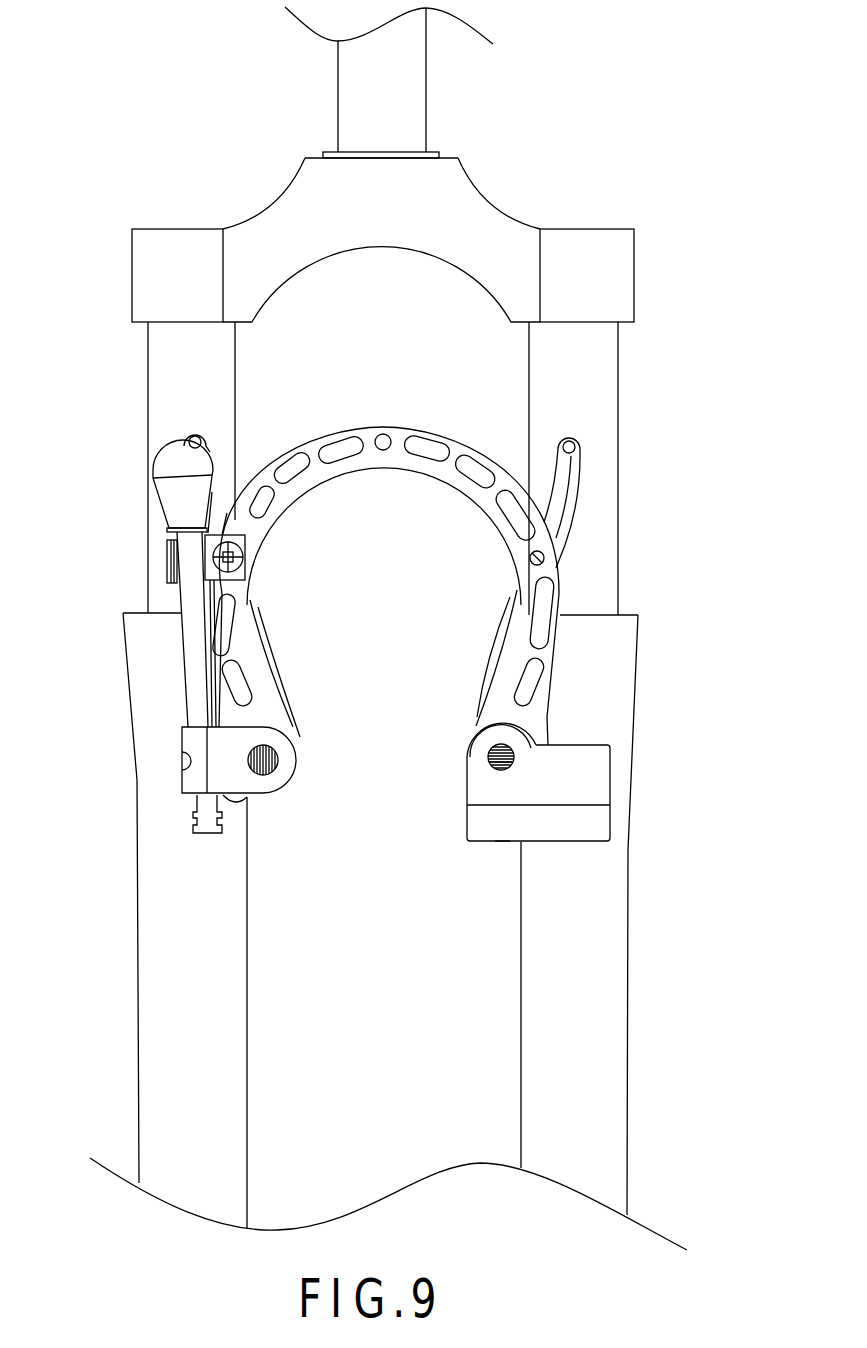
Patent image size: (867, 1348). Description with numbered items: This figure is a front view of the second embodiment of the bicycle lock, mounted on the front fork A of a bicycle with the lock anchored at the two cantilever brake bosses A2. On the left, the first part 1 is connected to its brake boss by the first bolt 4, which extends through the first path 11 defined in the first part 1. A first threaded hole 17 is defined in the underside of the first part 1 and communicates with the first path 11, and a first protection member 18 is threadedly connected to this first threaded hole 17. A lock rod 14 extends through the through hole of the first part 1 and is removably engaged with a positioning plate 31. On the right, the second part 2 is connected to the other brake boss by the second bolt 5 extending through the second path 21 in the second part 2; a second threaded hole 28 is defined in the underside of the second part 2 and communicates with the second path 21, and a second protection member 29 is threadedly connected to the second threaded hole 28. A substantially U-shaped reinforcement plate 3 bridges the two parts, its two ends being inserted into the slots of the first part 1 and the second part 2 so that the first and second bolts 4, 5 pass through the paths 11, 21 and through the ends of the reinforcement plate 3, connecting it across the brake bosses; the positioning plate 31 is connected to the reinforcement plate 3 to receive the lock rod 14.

The bicycle front fork A is at (467, 211).
The brake mounting post A2 is at (188, 438).
The reinforcement plate 3 is at (397, 434).
The positioning plate 31 is at (240, 537).
The lock rod 14 is at (193, 602).
The first part 1 is at (174, 765).
The first threaded hole 17 is at (182, 762).
The first protection member 18 is at (310, 830).
The first path 11 is at (291, 830).
The first bolt 4 is at (275, 765).
The second part 2 is at (589, 785).
The second path 21 is at (437, 766).
The second bolt 5 is at (488, 756).
The second protection member 29 is at (499, 769).
The second threaded hole 28 is at (503, 844).